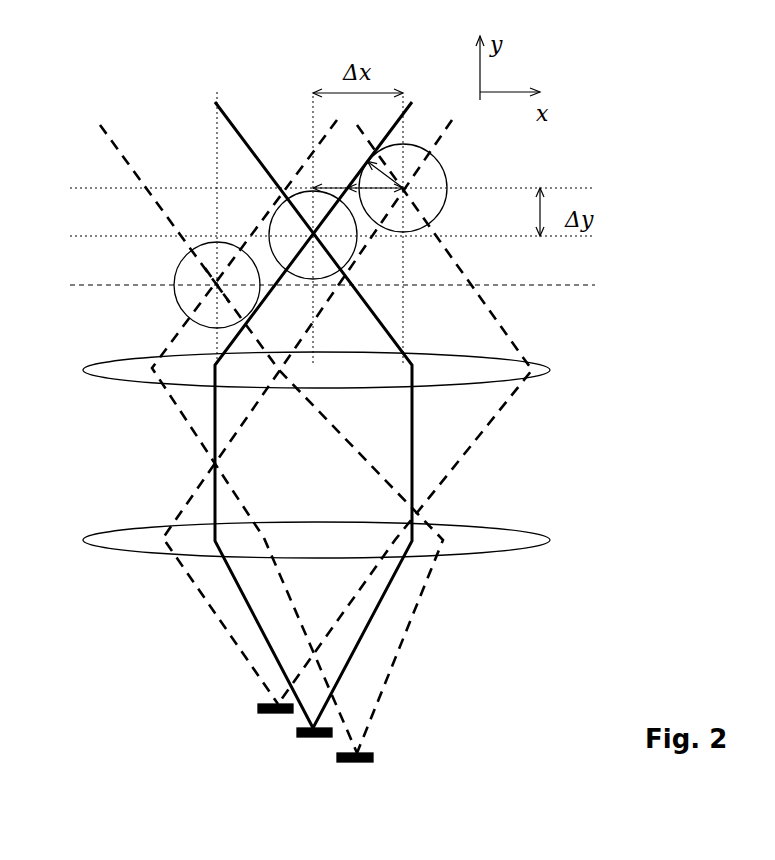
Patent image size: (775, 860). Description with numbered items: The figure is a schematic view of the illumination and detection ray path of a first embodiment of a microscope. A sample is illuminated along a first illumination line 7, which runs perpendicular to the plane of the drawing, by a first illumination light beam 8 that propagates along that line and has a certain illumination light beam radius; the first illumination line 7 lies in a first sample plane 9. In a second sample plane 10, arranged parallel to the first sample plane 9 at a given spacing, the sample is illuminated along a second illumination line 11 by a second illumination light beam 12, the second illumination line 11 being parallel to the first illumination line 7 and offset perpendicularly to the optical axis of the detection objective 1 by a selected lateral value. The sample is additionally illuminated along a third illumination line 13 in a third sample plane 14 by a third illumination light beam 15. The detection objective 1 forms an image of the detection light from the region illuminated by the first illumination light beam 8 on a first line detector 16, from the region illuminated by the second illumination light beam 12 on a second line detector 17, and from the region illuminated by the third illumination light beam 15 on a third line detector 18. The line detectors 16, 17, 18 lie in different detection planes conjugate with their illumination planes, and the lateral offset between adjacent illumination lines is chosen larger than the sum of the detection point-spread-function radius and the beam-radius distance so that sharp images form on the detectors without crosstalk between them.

The detection objective 1 is at (595, 367).
The first illumination line 7 is at (405, 187).
The first illumination light beam 8 is at (413, 148).
The first sample plane 9 is at (580, 188).
The second sample plane 10 is at (582, 238).
The second illumination line 11 is at (277, 212).
The second illumination light beam 12 is at (302, 175).
The third illumination line 13 is at (215, 287).
The third sample plane 14 is at (572, 286).
The third illumination light beam 15 is at (185, 262).
The first line detector 16 is at (257, 708).
The second line detector 17 is at (297, 733).
The third line detector 18 is at (353, 762).